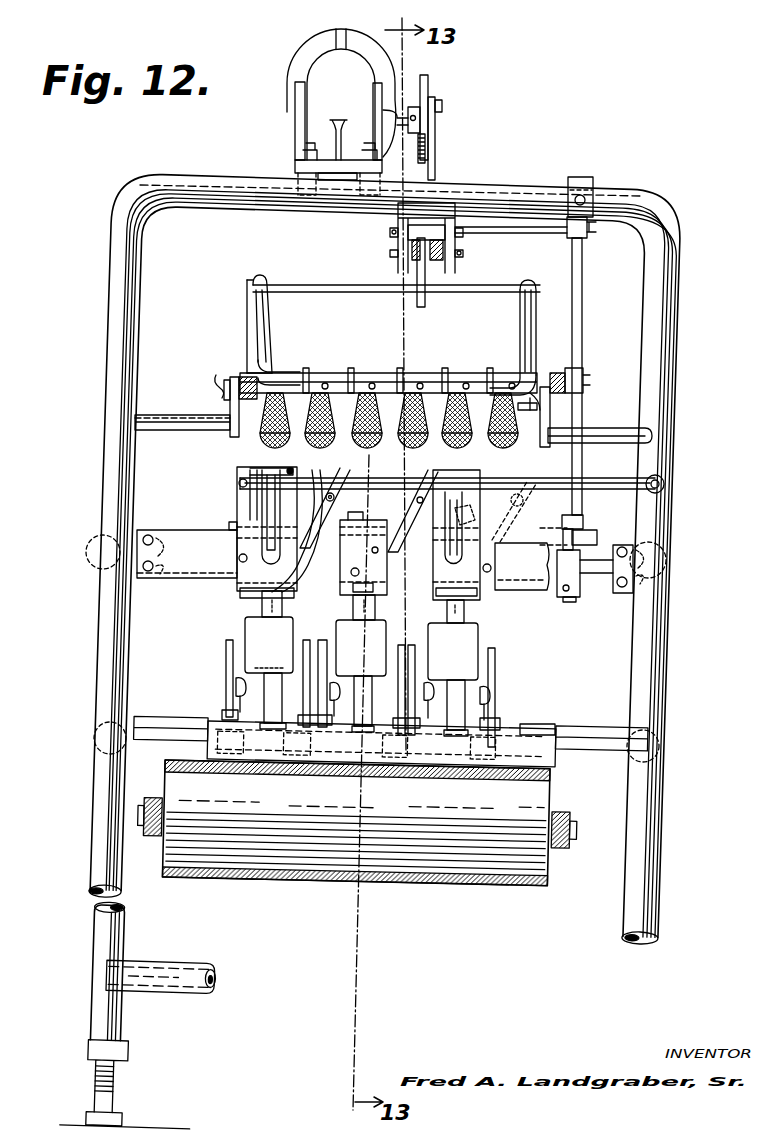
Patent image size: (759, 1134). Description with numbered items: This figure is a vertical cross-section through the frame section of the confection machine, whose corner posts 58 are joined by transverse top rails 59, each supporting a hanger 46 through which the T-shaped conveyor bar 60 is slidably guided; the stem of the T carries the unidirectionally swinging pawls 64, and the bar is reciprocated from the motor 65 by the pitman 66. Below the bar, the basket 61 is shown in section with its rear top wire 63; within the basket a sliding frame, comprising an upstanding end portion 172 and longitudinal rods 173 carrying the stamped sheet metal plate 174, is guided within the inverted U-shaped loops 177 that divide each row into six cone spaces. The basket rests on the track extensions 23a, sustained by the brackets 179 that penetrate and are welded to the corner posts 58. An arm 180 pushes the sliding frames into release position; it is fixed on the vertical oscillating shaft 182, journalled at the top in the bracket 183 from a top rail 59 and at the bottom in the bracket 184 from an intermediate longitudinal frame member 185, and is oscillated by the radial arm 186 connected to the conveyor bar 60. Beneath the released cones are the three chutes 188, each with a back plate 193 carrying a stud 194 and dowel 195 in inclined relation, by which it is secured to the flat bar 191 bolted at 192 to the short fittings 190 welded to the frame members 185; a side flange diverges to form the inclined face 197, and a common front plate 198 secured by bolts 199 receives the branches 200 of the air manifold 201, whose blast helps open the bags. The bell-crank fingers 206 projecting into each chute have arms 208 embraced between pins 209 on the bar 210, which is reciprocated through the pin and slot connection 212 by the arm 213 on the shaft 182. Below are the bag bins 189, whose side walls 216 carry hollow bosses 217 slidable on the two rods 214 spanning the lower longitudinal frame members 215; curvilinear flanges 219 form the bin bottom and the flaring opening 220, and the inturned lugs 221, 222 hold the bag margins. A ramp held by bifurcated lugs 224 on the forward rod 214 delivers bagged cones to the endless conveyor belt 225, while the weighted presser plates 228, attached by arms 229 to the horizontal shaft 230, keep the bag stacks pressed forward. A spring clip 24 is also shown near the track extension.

The track extension 23a is at (236, 399).
The spring clip 24 is at (222, 380).
The hanger 46 is at (382, 243).
The corner post 58 is at (106, 290).
The top rail 59 is at (242, 176).
The conveyor bar 60 is at (448, 243).
The basket 61 is at (240, 338).
The top wire 63 is at (348, 287).
The pawl 64 is at (432, 278).
The motor 65 is at (312, 58).
The pitman 66 is at (434, 152).
The upstanding end portion 172 is at (548, 376).
The longitudinal rod 173 is at (426, 373).
The sheet metal plate 174 is at (376, 373).
The inverted U-shaped loop 177 is at (324, 373).
The bracket 179 is at (170, 420).
The arm 180 is at (573, 372).
The vertical oscillating shaft 182 is at (583, 300).
The bracket 183 is at (586, 194).
The bracket 184 is at (600, 588).
The intermediate longitudinal frame member 185 is at (100, 558).
The radial arm 186 is at (522, 238).
The chute 188 is at (248, 600).
The bag bin 189 is at (232, 674).
The short fitting 190 is at (146, 530).
The flat bar 191 is at (180, 574).
The bolt 192 is at (154, 542).
The back plate 193 is at (478, 480).
The stud 194 is at (380, 542).
The dowel 195 is at (372, 572).
The inclined face 197 is at (532, 448).
The front plate 198 is at (284, 452).
The bolt 199 is at (238, 483).
The branch 200 is at (457, 451).
The air manifold 201 is at (552, 478).
The finger 206 is at (308, 516).
The downwardly extending arm 208 is at (356, 506).
The pin 209 is at (512, 524).
The bar 210 is at (230, 526).
The pin and slot connection 212 is at (597, 540).
The arm 213 is at (584, 522).
The rod 214 is at (152, 720).
The lower longitudinal frame member 215 is at (96, 748).
The side wall 216 is at (226, 656).
The hollow boss 217 is at (227, 770).
The curvilinear flange 219 is at (264, 691).
The flaring opening 220 is at (284, 722).
The inturned lug 221 is at (532, 680).
The lug 222 is at (222, 712).
The bifurcated lug 224 is at (514, 724).
The endless conveyor belt 225 is at (552, 774).
The weighted presser plate 228 is at (346, 624).
The arm 229 is at (262, 606).
The horizontal shaft 230 is at (326, 452).